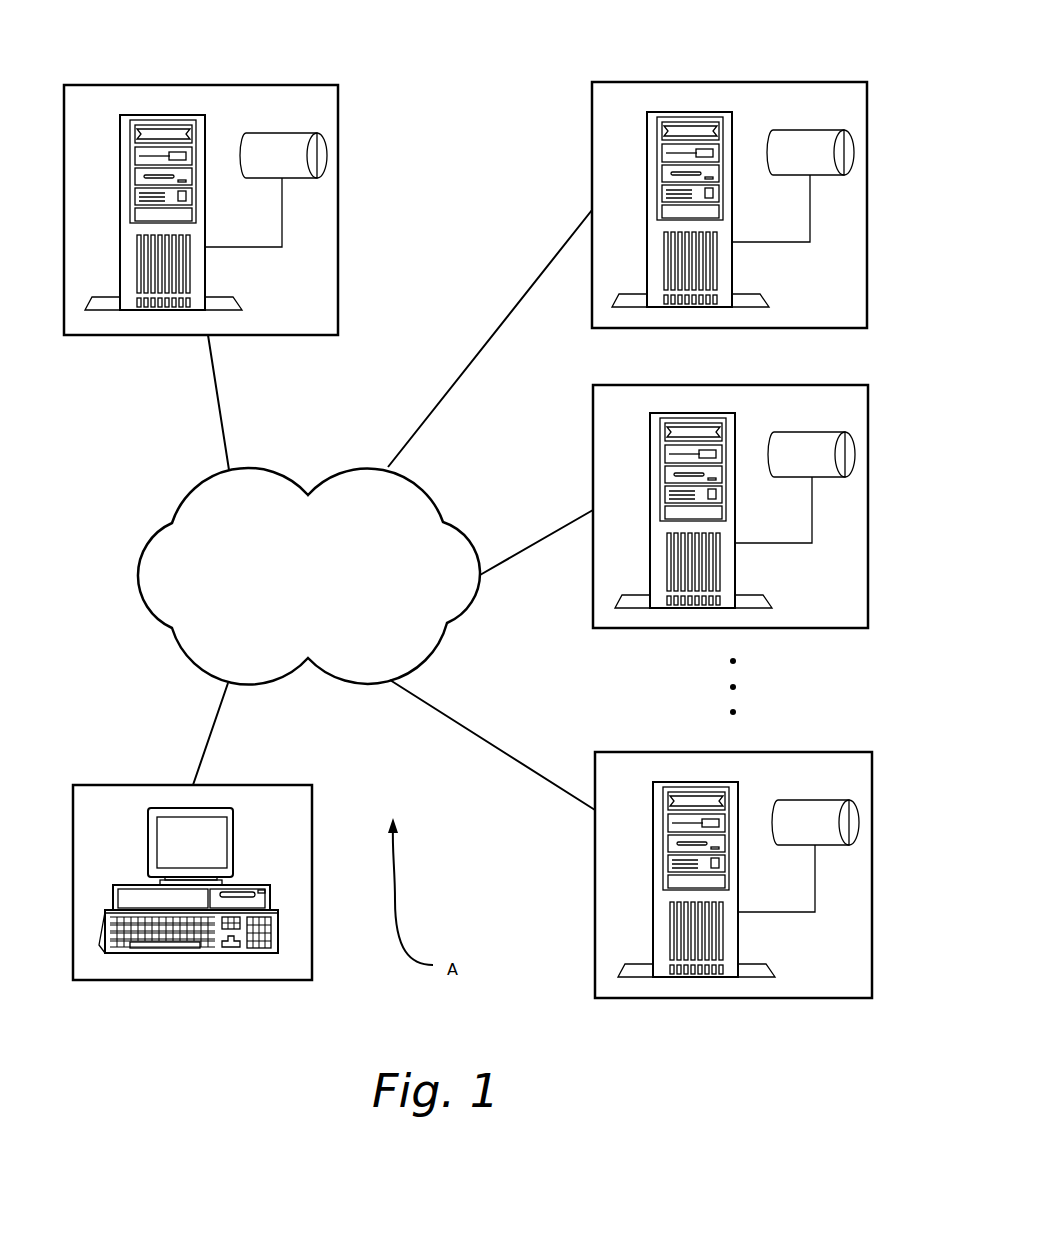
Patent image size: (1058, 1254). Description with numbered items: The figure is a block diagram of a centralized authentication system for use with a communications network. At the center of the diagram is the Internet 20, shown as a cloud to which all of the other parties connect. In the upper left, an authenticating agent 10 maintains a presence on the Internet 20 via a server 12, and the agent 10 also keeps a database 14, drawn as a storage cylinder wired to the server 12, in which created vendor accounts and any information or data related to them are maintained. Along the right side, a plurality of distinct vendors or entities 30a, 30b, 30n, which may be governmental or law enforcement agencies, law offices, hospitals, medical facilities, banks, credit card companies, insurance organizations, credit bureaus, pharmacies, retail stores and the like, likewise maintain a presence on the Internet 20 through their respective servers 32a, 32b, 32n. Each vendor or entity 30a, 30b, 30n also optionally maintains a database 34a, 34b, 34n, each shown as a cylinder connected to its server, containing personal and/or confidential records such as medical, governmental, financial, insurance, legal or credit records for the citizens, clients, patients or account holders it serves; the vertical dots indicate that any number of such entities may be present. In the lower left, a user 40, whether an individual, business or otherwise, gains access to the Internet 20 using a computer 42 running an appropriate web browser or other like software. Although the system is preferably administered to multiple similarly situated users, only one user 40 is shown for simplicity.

The authenticating agent 10 is at (338, 202).
The server 12 is at (205, 270).
The database 14 is at (282, 133).
The Internet 20 is at (138, 577).
The vendor or entity 30a is at (723, 82).
The server 32a is at (732, 265).
The database 34a is at (810, 130).
The vendor or entity 30b is at (793, 628).
The server 32b is at (735, 565).
The database 34b is at (812, 432).
The vendor or entity 30n is at (748, 998).
The server 32n is at (738, 935).
The database 34n is at (815, 800).
The user 40 is at (195, 980).
The computer 42 is at (128, 885).